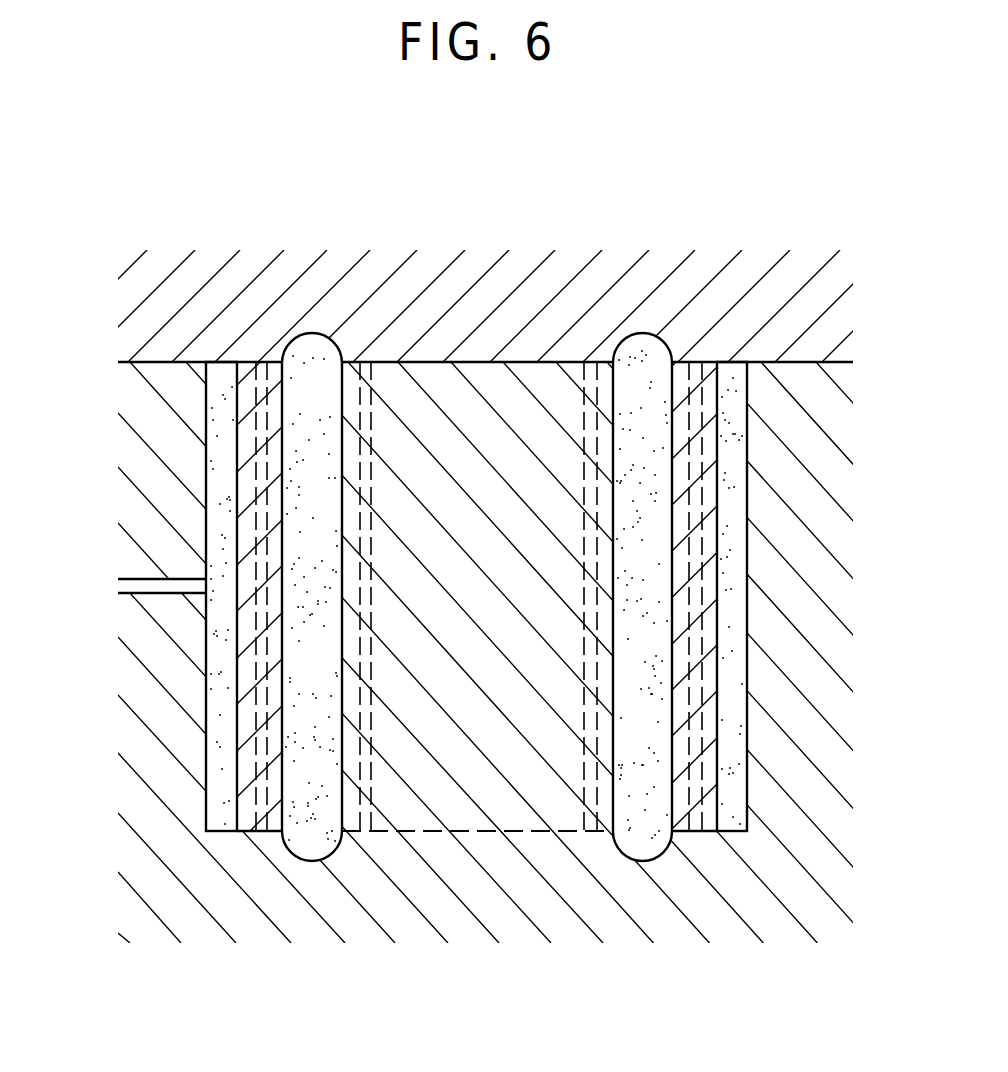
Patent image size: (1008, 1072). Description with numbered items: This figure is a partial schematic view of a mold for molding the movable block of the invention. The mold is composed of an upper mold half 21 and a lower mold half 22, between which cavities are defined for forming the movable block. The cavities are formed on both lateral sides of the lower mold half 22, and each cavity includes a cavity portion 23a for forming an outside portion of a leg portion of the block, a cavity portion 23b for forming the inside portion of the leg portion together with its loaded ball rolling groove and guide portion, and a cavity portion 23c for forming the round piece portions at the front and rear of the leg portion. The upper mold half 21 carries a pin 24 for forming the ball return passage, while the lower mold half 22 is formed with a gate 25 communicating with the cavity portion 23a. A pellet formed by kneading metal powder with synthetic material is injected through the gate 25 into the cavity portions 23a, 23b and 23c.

The upper mold half 21 is at (136, 290).
The lower mold half 22 is at (136, 444).
The cavity portion 23a is at (222, 722).
The cavity portion 23b is at (330, 523).
The cavity portion 23c is at (318, 348).
The pin 24 is at (246, 445).
The gate 25 is at (157, 588).